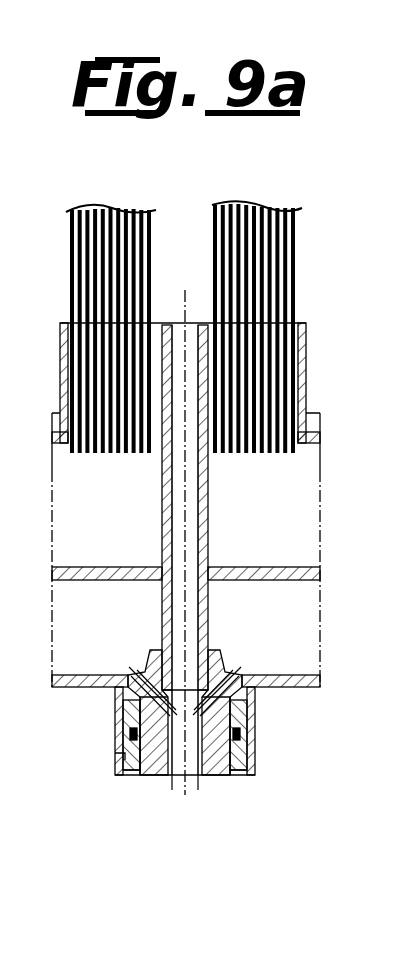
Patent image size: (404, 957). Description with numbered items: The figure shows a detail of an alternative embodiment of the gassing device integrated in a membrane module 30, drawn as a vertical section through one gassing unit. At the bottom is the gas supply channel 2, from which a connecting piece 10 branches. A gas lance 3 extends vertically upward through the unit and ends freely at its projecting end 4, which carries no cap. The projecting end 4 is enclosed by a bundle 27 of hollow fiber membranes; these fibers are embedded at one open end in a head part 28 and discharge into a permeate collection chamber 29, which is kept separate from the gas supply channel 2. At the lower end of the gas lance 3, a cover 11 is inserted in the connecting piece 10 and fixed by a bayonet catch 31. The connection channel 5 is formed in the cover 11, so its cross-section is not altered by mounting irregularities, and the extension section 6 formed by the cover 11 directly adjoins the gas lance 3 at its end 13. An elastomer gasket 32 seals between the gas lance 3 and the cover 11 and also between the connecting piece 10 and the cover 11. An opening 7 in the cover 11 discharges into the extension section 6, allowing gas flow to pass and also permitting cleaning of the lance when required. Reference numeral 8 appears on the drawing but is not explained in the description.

The gas supply channel 2 is at (68, 620).
The gas lance 3 is at (212, 628).
The end of the gas lance 4 is at (168, 318).
The connection channel 5 is at (116, 700).
The extension section 6 is at (192, 782).
The opening 7 is at (178, 778).
The fiber bundle 8 is at (7, 279).
The connecting piece 10 is at (118, 727).
The cover 11 is at (236, 775).
The end of the gas lance 13 is at (258, 765).
The bundle of hollow fiber membranes 27 is at (232, 206).
The head part 28 is at (306, 354).
The permeate collection chamber 29 is at (70, 497).
The membrane module 30 is at (2, 214).
The bayonet catch 31 is at (116, 763).
The elastomer gasket 32 is at (243, 731).